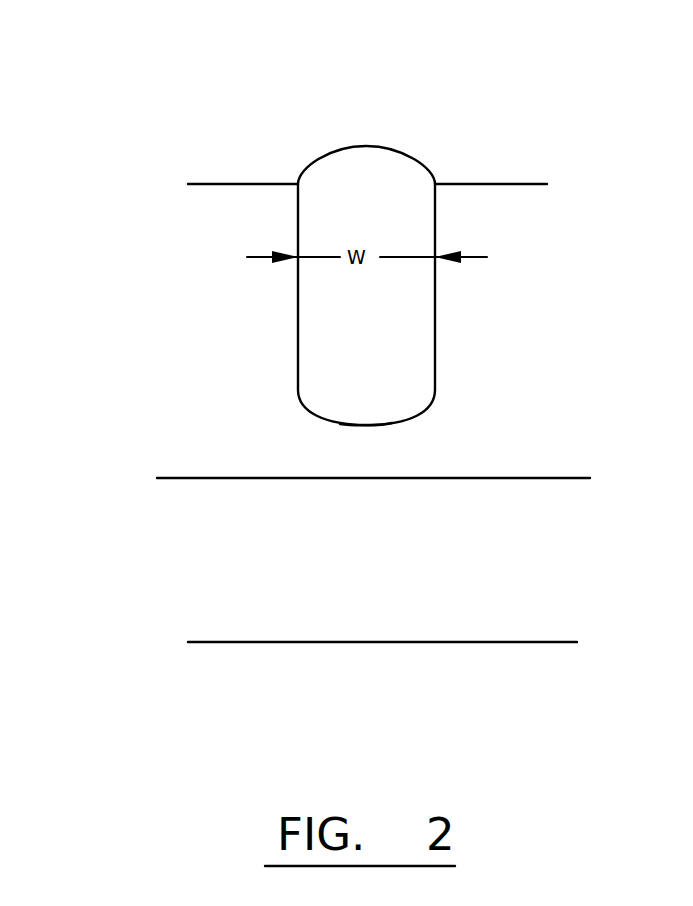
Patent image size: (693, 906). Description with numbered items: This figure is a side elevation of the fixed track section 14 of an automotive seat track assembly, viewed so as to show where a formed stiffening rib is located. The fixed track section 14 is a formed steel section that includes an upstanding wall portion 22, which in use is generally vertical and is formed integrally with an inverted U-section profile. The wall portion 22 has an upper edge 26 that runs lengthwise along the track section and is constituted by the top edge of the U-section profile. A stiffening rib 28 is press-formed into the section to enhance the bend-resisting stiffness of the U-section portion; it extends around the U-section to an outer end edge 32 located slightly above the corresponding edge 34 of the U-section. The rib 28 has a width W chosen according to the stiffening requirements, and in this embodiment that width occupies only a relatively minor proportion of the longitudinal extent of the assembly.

The fixed track section 14 is at (397, 442).
The upstanding wall portion 22 is at (315, 547).
The upper edge 26 is at (230, 184).
The stiffening rib 28 is at (357, 332).
The outer end edge 32 is at (367, 426).
The edge of U-section 34 is at (257, 478).